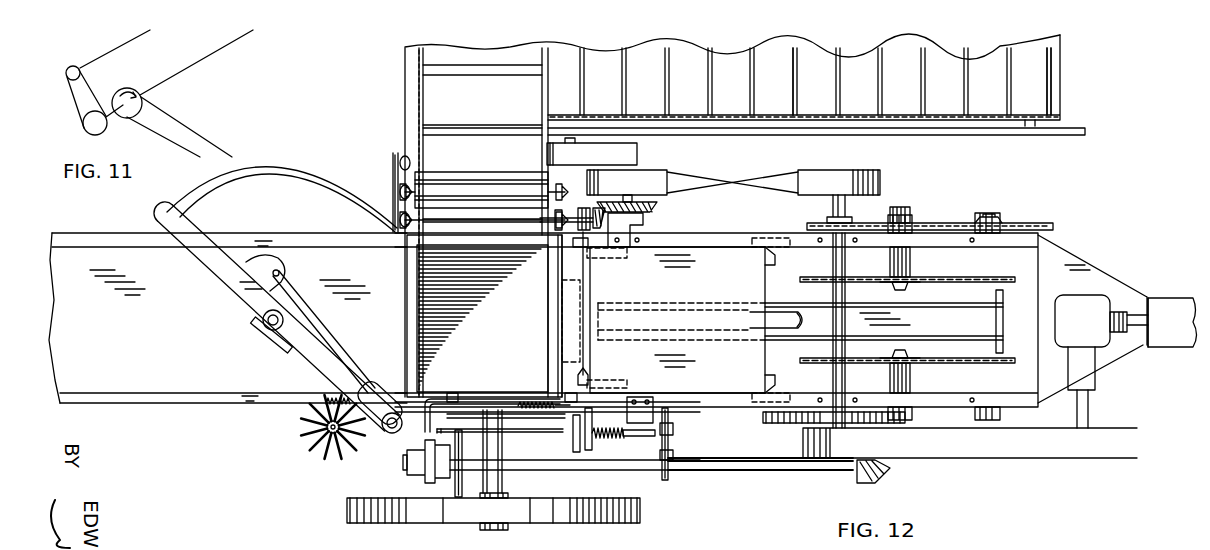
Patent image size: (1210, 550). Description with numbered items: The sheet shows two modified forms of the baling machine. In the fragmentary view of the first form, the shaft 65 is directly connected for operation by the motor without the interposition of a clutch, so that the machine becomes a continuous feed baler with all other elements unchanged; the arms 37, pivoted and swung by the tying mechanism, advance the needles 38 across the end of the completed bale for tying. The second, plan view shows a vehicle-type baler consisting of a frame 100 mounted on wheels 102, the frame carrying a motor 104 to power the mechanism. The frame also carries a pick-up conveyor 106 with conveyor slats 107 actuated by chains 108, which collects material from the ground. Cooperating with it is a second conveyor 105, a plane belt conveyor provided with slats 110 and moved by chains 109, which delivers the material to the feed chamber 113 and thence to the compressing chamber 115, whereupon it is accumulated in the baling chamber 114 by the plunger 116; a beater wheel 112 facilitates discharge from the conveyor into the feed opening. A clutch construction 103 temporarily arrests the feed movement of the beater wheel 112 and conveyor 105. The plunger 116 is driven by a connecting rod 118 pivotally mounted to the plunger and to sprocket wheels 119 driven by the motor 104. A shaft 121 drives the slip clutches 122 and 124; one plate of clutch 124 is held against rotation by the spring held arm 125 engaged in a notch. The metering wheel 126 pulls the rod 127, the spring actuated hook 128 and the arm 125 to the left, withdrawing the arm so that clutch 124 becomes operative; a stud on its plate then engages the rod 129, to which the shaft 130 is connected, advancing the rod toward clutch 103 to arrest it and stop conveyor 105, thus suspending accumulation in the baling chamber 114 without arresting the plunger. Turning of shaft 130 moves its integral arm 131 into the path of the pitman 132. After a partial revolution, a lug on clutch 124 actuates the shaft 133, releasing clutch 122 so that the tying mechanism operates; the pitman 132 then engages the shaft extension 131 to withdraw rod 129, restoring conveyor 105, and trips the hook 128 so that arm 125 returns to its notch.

In FIG. 11, the shaft 65 is at (185, 72).
In FIG. 12, the arms 37 is at (218, 267).
In FIG. 12, the needles 38 is at (285, 170).
In FIG. 12, the frame 100 is at (1060, 268).
In FIG. 12, the wheels 102 is at (626, 470).
In FIG. 12, the clutch construction 103 is at (578, 208).
In FIG. 12, the motor 104 is at (1126, 342).
In FIG. 12, the second conveyor 105 is at (482, 100).
In FIG. 12, the pick-up conveyor 106 is at (816, 85).
In FIG. 12, the conveyor slats 107 is at (798, 72).
In FIG. 12, the chains 108 is at (983, 113).
In FIG. 12, the chains 109 is at (418, 106).
In FIG. 12, the slats 110 is at (495, 137).
In FIG. 12, the beater wheel 112 is at (445, 178).
In FIG. 12, the feed chamber 113 is at (482, 318).
In FIG. 12, the baling chamber 114 is at (228, 318).
In FIG. 12, the compressing chamber 115 is at (484, 316).
In FIG. 12, the plunger 116 is at (690, 320).
In FIG. 12, the connecting rod 118 is at (876, 321).
In FIG. 12, the sprocket wheels 119 is at (928, 275).
In FIG. 12, the shaft 121 is at (765, 465).
In FIG. 12, the slip clutch 122 is at (423, 477).
In FIG. 12, the slip clutch 124 is at (575, 435).
In FIG. 12, the spring held arm 125 is at (552, 413).
In FIG. 12, the metering wheel 126 is at (317, 455).
In FIG. 12, the rod 127 is at (420, 397).
In FIG. 12, the spring actuated hook 128 is at (467, 400).
In FIG. 12, the rod 129 is at (587, 265).
In FIG. 12, the shaft 130 is at (520, 397).
In FIG. 12, the integral arm 131 is at (425, 423).
In FIG. 12, the pitman 132 is at (377, 400).
In FIG. 12, the shaft 133 is at (533, 432).